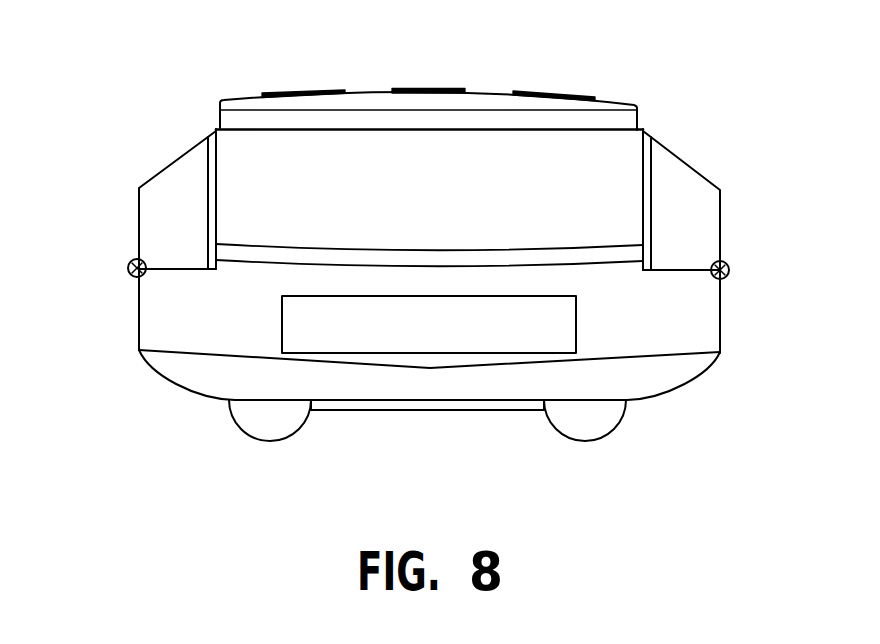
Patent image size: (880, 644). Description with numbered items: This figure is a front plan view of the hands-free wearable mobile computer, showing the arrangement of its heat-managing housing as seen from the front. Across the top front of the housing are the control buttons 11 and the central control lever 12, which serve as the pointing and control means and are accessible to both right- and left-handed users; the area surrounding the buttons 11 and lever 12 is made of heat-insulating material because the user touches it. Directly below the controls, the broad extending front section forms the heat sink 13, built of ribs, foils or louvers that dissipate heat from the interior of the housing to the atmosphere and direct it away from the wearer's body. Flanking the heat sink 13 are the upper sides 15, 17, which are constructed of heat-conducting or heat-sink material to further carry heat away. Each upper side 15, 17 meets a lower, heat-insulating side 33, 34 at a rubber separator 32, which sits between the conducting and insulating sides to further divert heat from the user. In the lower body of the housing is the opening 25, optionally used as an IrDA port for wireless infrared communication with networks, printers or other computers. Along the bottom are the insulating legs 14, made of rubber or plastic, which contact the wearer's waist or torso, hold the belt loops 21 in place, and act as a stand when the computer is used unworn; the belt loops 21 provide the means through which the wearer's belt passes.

The control buttons 11 is at (302, 92).
The control lever 12 is at (430, 88).
The heat sink 13 is at (281, 257).
The legs 14 is at (258, 425).
The upper side 15 is at (697, 207).
The upper side 17 is at (163, 206).
The belt loops 21 is at (473, 410).
The opening 25 is at (503, 347).
The rubber separator 32 is at (128, 268).
The bottom insulating side 33 is at (707, 330).
The bottom insulating side 34 is at (150, 327).